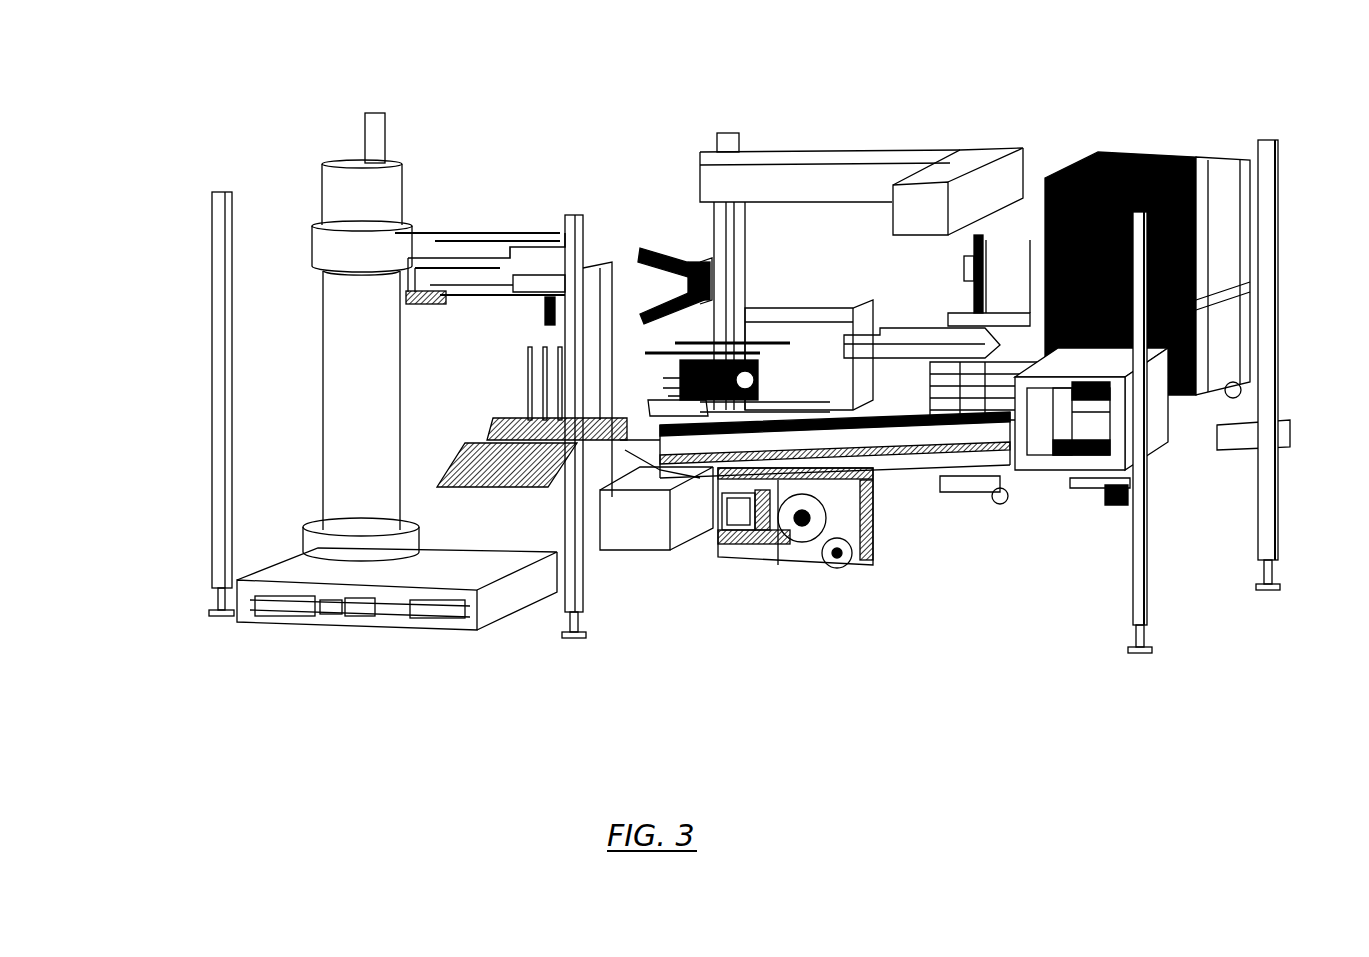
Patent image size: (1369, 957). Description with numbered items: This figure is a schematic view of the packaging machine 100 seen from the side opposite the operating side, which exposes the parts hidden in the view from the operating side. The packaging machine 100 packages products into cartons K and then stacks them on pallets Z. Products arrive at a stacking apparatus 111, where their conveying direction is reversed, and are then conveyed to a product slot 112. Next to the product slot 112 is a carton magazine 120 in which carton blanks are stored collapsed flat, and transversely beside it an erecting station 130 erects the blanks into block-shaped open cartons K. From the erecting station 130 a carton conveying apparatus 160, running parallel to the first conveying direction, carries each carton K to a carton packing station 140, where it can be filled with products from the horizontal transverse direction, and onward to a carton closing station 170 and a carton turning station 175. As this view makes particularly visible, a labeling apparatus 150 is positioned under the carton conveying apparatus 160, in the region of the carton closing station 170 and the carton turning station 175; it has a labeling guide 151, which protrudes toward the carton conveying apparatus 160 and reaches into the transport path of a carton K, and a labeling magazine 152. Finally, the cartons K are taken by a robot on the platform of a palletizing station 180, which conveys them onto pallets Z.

The packaging machine 100 is at (420, 663).
The stacking apparatus 111 is at (762, 325).
The product slot 112 is at (1025, 328).
The carton magazine 120 is at (1198, 157).
The erecting station 130 is at (1058, 497).
The carton packing station 140 is at (935, 490).
The labeling apparatus 150 is at (835, 603).
The labeling guide 151 is at (632, 428).
The labeling magazine 152 is at (806, 554).
The carton conveying apparatus 160 is at (1112, 492).
The carton closing station 170 is at (762, 394).
The carton turning station 175 is at (626, 400).
The palletizing station 180 is at (162, 598).
The carton K is at (1167, 400).
The pallet Z is at (343, 610).